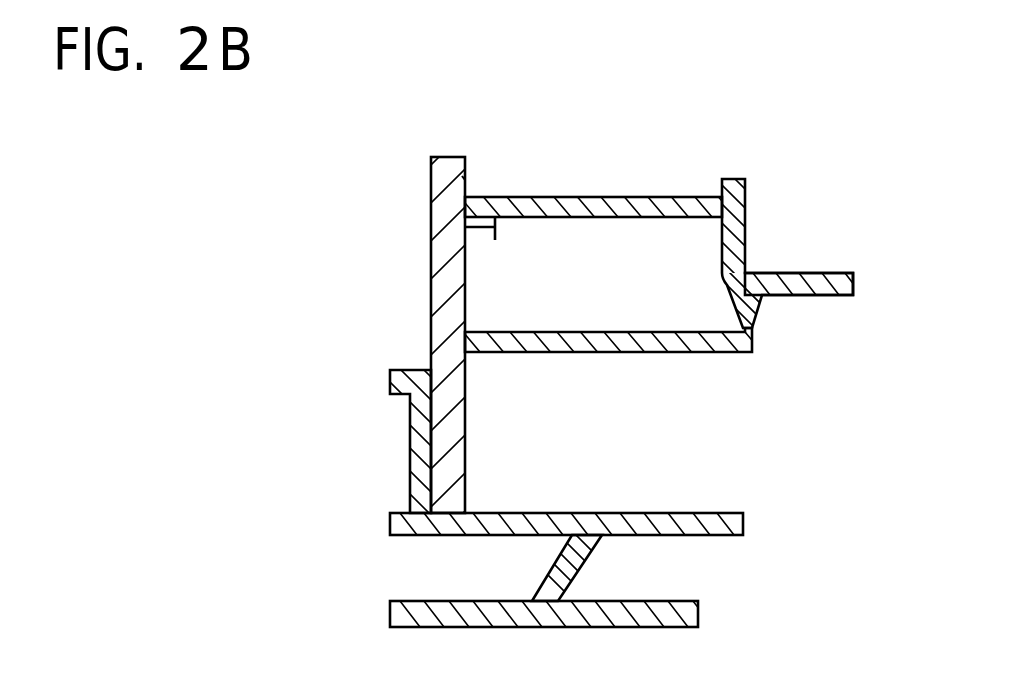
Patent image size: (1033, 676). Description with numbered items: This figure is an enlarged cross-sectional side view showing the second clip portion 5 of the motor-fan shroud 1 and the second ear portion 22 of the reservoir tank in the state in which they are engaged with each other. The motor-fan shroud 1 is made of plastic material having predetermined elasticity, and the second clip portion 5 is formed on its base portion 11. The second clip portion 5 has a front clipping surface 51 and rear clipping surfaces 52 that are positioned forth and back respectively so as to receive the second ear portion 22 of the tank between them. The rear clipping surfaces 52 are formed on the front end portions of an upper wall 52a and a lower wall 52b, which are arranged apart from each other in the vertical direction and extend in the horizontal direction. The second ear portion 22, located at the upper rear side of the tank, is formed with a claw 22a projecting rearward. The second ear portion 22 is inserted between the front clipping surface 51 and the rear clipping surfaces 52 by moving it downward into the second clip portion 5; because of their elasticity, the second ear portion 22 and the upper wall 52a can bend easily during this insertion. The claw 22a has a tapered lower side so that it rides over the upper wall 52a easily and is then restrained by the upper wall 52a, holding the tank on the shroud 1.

The motor-fan shroud 1 is at (829, 207).
The base portion 11 is at (810, 287).
The second ear portion 22 is at (440, 176).
The claw 22a is at (497, 243).
The second clip portion 5 is at (414, 348).
The front clipping surface 51 is at (425, 455).
The rear clipping surfaces 52 is at (465, 177).
The upper wall 52a is at (588, 207).
The lower wall 52b is at (604, 340).